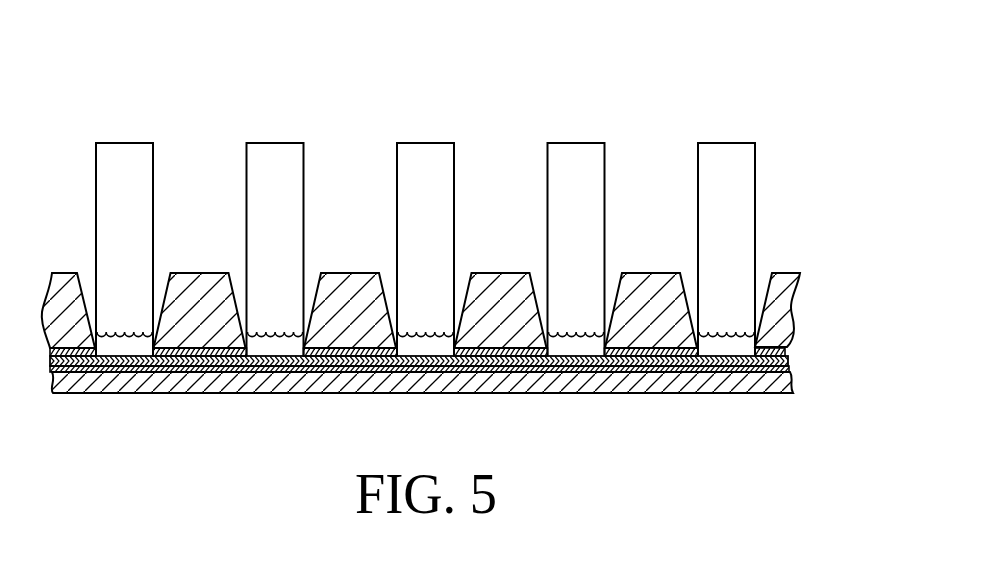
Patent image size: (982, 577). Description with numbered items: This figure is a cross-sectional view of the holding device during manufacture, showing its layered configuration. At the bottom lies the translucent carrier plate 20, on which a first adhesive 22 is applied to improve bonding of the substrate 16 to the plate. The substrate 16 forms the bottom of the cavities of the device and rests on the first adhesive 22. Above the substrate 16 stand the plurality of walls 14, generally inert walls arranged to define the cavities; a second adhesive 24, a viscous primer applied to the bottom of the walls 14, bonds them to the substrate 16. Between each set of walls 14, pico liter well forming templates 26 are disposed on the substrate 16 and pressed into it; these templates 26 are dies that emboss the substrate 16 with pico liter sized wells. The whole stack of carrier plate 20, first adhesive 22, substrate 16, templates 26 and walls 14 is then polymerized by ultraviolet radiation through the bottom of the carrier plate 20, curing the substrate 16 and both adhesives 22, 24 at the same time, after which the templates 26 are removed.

The pico liter well forming templates 26 is at (727, 172).
The plurality of walls 14 is at (780, 280).
The second adhesive 24 is at (783, 352).
The substrate 16 is at (790, 360).
The first adhesive 22 is at (790, 370).
The carrier plate 20 is at (778, 397).